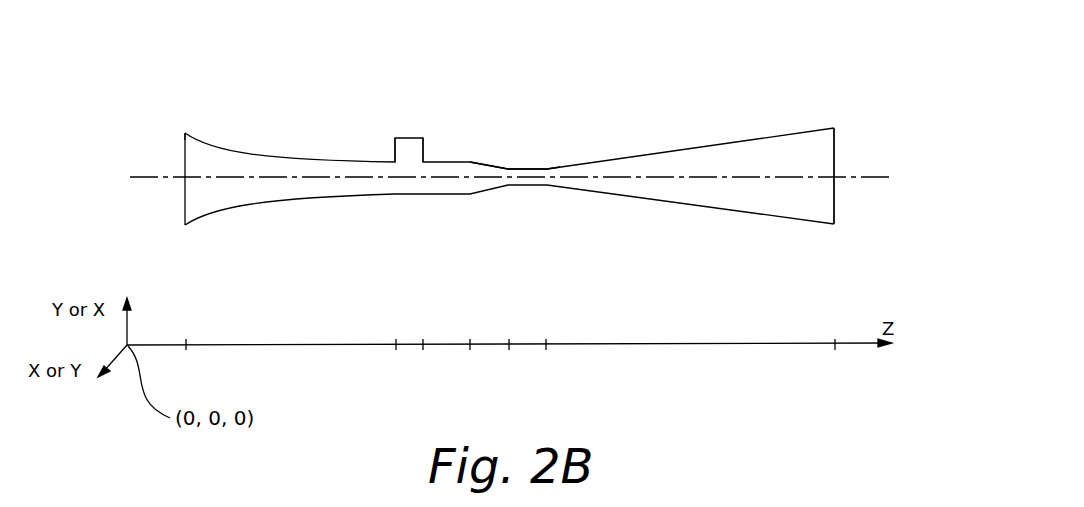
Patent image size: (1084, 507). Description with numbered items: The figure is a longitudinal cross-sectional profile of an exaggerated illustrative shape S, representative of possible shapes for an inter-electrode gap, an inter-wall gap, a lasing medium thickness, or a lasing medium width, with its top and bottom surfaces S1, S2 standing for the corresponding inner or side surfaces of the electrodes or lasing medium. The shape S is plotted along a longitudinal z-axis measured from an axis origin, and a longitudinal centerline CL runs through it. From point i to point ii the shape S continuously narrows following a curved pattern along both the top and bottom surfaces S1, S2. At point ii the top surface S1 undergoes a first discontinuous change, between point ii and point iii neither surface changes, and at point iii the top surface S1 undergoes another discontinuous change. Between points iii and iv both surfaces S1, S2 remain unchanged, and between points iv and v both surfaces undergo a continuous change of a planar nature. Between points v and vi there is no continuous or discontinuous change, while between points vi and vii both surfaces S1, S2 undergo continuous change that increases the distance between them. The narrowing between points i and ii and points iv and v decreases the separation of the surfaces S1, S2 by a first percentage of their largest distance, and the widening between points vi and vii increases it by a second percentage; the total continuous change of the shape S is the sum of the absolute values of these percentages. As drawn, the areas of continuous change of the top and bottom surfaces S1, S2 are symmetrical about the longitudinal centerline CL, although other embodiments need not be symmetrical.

The shape S is at (509, 146).
The top surface S1 is at (272, 155).
The bottom surface S2 is at (272, 200).
The longitudinal centerline CL is at (525, 177).
The point i is at (185, 133).
The point ii is at (395, 138).
The point iii is at (423, 138).
The point iv is at (470, 162).
The point v is at (508, 169).
The point vi is at (547, 169).
The point vii is at (835, 254).